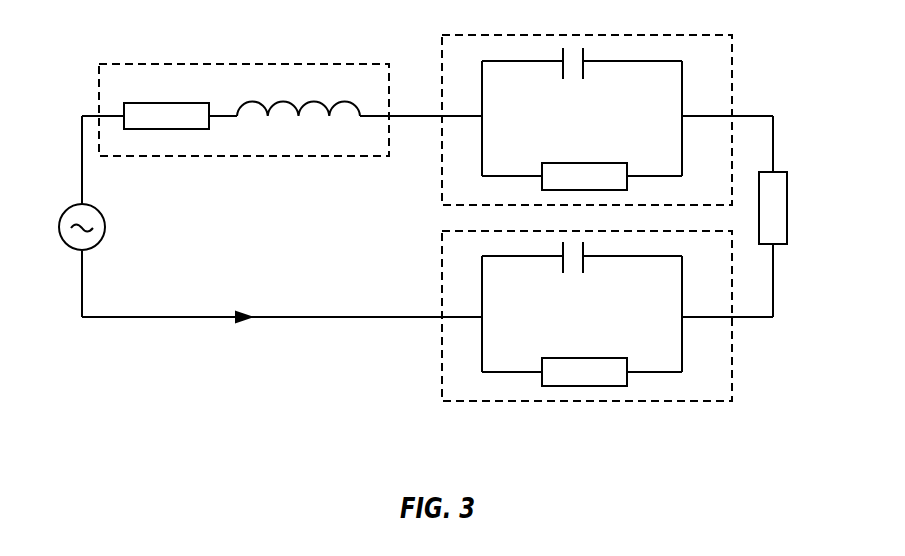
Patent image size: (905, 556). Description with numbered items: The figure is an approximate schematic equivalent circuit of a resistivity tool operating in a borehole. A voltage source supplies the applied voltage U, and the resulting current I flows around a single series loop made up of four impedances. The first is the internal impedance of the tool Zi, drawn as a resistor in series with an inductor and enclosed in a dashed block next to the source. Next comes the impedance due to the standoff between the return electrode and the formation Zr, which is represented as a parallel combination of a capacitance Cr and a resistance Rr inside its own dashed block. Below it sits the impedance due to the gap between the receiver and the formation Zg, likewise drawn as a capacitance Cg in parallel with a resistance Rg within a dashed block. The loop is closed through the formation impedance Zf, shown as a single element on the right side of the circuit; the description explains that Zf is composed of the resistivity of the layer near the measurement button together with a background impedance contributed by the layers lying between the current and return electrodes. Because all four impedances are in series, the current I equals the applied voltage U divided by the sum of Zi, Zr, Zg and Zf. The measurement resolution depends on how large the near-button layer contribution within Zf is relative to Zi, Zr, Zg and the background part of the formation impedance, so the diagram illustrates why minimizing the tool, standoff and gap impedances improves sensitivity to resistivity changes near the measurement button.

The applied voltage U is at (96, 216).
The current I is at (171, 304).
The internal impedance of the tool Zi is at (282, 110).
The impedance due to the standoff between return electrode and formation Zr is at (607, 102).
The capacitance of the electrode Cr is at (582, 39).
The resistance of the electrode Rr is at (582, 157).
The impedance due to the gap between receiver and formation Zg is at (511, 337).
The capacitance of the gap / ground Cg is at (582, 278).
The resistance of the gap / ground Rg is at (582, 401).
The formation impedance Zf is at (790, 216).